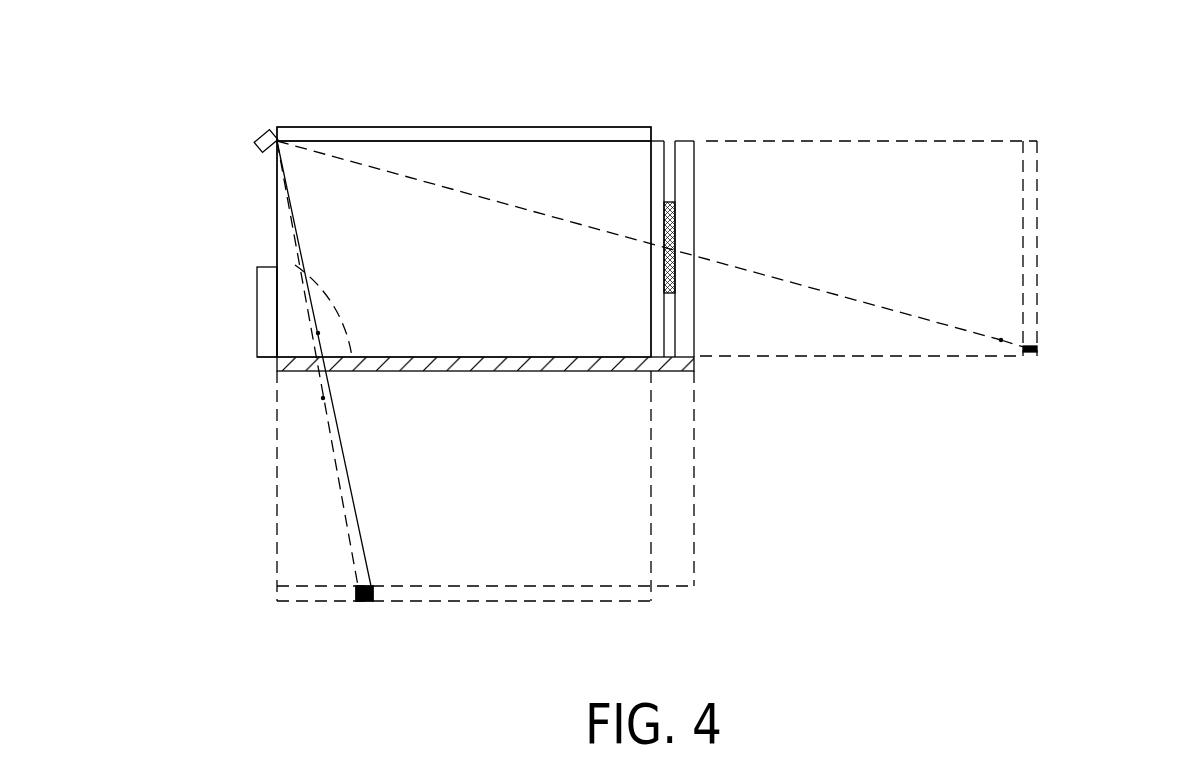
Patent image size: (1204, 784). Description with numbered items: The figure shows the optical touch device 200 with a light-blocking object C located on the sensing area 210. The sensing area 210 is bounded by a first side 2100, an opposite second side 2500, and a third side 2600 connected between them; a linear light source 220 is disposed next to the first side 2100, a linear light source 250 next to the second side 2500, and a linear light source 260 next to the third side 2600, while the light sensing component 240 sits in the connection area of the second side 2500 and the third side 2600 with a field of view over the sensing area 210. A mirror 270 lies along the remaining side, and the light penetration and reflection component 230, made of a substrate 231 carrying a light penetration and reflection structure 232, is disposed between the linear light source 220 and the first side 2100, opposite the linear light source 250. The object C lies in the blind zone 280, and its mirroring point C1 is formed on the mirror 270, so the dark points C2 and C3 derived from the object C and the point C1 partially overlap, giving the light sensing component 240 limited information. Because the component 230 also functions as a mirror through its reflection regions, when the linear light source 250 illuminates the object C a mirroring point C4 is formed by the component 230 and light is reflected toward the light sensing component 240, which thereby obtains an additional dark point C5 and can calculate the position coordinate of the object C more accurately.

The optical touch device 200 is at (1196, 75).
The sensing area 210 is at (390, 159).
The third side 2600 is at (456, 139).
The linear light source 260 is at (542, 130).
The first side 2100 is at (648, 163).
The second side 2500 is at (275, 213).
The linear light source 250 is at (262, 338).
The blind zone 280 is at (291, 285).
The mirror 270 is at (622, 368).
The light penetration and reflection component 230 is at (664, 148).
The substrate 231 is at (657, 344).
The light penetration and reflection structure 232 is at (675, 271).
The linear light source 220 is at (700, 152).
The light sensing component 240 is at (261, 136).
The light-blocking object C is at (332, 333).
The mirroring point C1 is at (322, 399).
The dark point C2 is at (370, 602).
The dark point C3 is at (358, 602).
The mirroring point C4 is at (1001, 343).
The dark point C5 is at (1040, 348).